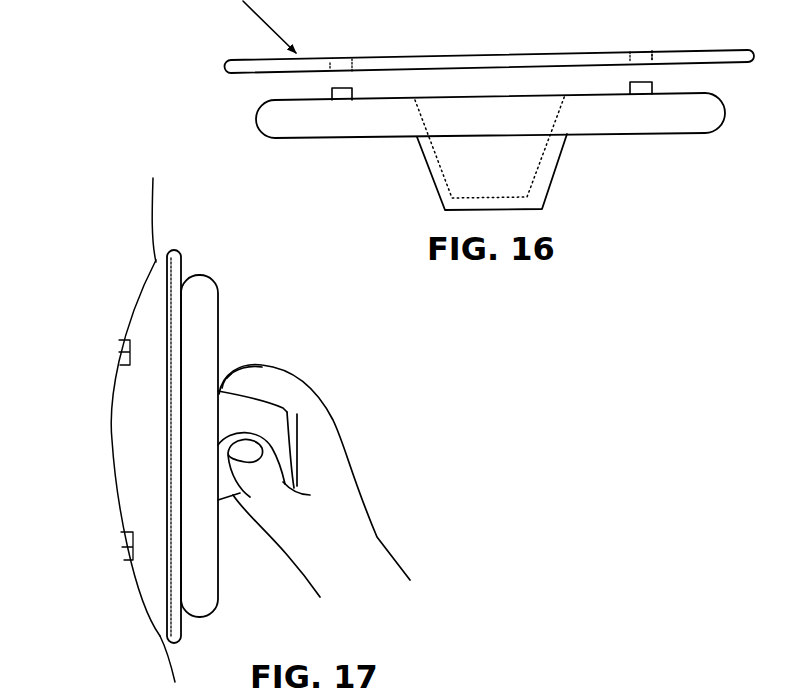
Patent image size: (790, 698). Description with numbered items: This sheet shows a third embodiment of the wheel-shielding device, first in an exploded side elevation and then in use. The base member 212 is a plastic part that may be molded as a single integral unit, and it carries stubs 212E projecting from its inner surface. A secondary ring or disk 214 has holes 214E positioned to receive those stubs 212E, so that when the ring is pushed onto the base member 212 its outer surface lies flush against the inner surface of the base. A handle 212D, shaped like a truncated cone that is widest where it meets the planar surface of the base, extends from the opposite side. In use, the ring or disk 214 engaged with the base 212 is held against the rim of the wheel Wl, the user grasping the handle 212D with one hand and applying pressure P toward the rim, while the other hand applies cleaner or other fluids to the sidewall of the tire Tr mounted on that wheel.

In FIG. 16, the base member 212 is at (366, 153).
In FIG. 17, the base member 212 is at (217, 306).
In FIG. 16, the secondary ring or disk 214 is at (490, 61).
In FIG. 17, the secondary ring or disk 214 is at (179, 268).
In FIG. 16, the handle 212D is at (557, 177).
In FIG. 16, the stubs 212E is at (632, 88).
In FIG. 16, the holes 214E is at (677, 34).
In FIG. 17, the tire Tr is at (155, 211).
In FIG. 17, the wheel Wl is at (106, 494).
In FIG. 17, the pressure P is at (230, 323).